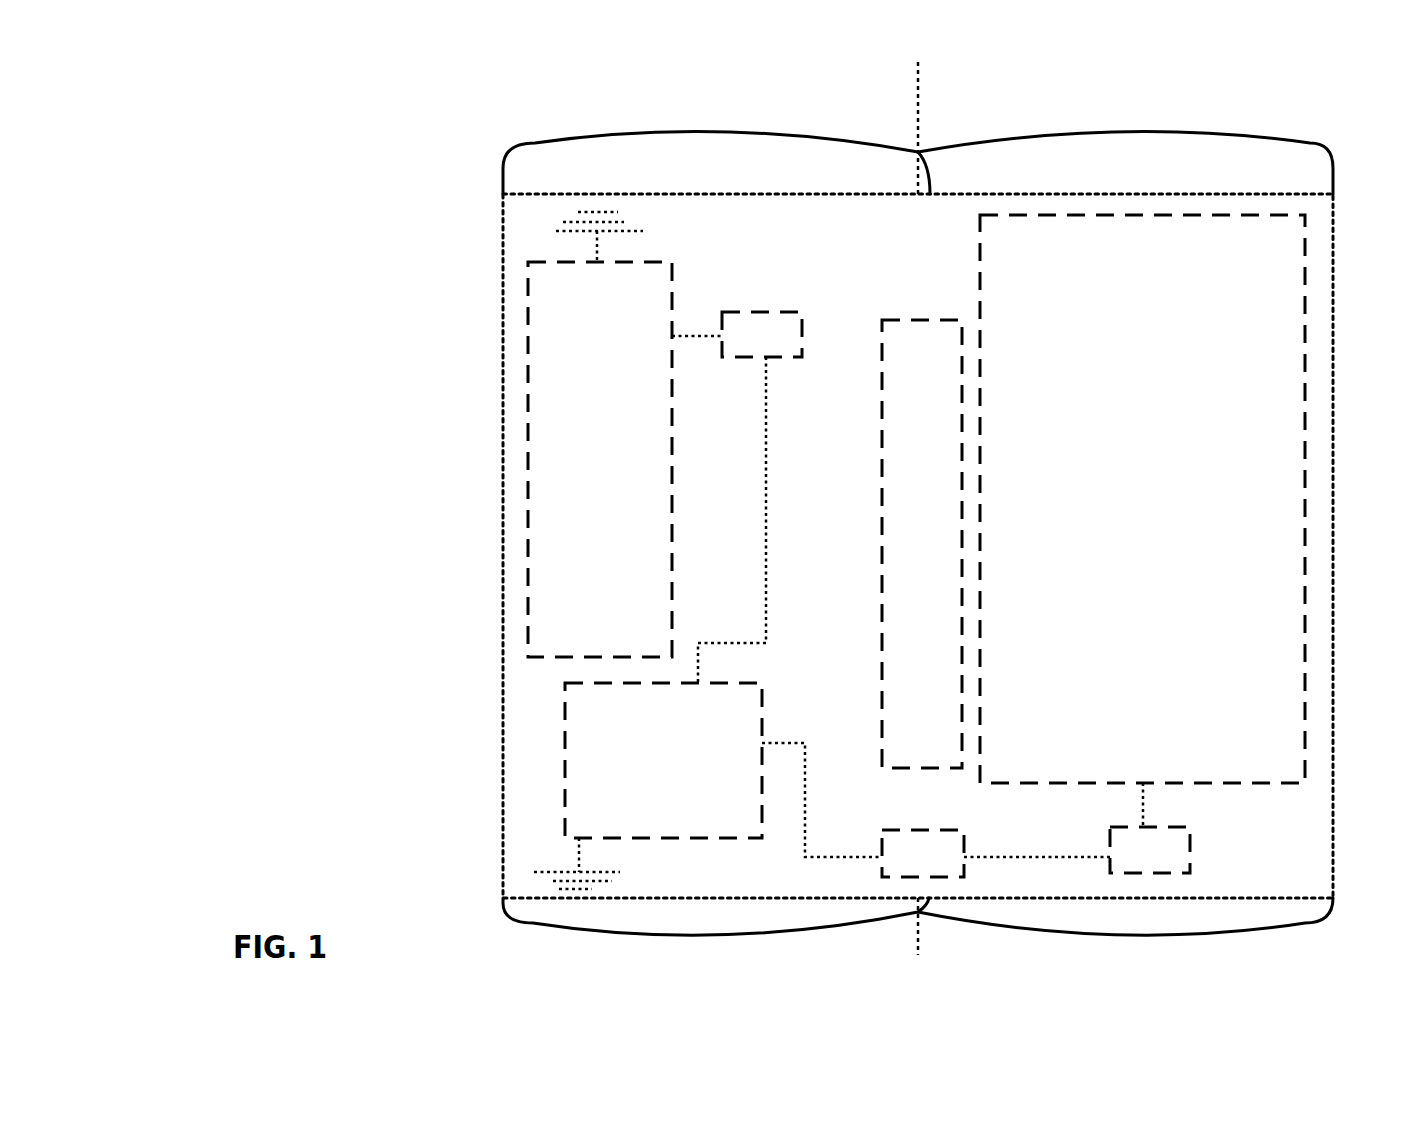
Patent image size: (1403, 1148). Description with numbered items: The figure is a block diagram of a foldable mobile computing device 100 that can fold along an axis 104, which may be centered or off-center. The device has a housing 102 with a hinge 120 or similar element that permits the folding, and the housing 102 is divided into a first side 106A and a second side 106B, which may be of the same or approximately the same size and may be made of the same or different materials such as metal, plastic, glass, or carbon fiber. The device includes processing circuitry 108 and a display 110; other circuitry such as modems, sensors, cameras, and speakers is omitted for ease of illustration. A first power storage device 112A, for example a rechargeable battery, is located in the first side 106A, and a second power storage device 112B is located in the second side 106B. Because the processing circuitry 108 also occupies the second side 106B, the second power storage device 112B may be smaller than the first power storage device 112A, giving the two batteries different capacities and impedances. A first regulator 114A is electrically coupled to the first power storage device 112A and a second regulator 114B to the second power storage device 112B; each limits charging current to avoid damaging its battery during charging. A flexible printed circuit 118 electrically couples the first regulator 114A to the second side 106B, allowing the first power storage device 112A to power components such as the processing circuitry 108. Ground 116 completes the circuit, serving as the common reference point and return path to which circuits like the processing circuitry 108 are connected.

The foldable mobile computing device 100 is at (390, 212).
The housing 102 is at (918, 497).
The axis 104 is at (917, 110).
The first side 106A is at (1157, 130).
The second side 106B is at (727, 132).
The processing circuitry 108 is at (682, 801).
The display 110 is at (1295, 862).
The first power storage device 112A is at (980, 308).
The second power storage device 112B is at (672, 295).
The first regulator 114A is at (1176, 862).
The second regulator 114B is at (787, 346).
The ground 116 is at (557, 218).
The flexible printed circuit 118 is at (942, 866).
The hinge 120 is at (940, 556).